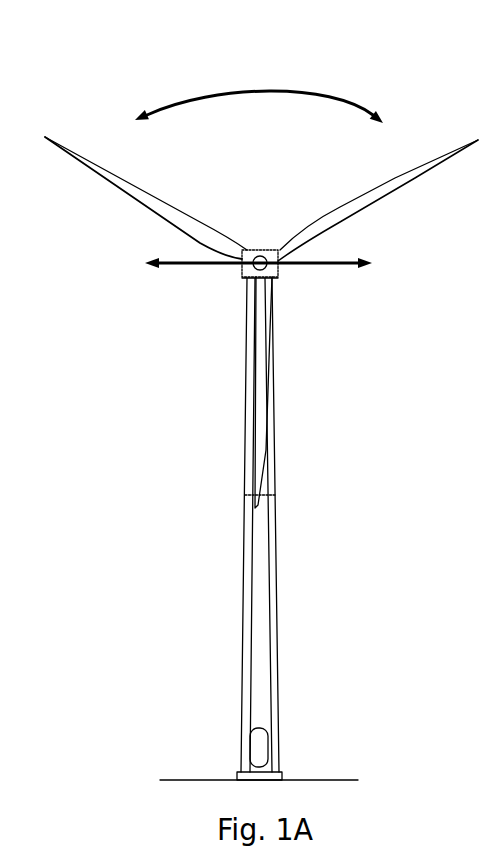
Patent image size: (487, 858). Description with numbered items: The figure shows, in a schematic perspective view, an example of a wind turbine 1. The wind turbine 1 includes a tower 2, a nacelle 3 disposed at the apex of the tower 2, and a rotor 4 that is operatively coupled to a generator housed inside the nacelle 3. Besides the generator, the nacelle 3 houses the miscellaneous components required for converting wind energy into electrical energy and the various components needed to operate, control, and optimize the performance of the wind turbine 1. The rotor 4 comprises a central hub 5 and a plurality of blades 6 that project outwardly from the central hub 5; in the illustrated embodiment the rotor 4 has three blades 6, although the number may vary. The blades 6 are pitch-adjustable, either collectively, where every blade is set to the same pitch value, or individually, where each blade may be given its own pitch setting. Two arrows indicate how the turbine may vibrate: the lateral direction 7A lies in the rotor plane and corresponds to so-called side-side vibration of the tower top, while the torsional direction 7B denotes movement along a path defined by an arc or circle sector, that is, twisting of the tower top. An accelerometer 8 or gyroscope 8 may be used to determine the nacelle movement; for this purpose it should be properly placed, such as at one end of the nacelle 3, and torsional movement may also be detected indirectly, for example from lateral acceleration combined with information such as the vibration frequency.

The wind turbine 1 is at (431, 109).
The tower 2 is at (265, 552).
The nacelle 3 is at (240, 275).
The rotor 4 is at (294, 315).
The central hub 5 is at (266, 268).
The blade 6 is at (390, 188).
The lateral direction 7A is at (337, 265).
The torsional direction 7B is at (295, 92).
The accelerometer or gyroscope 8 is at (242, 277).